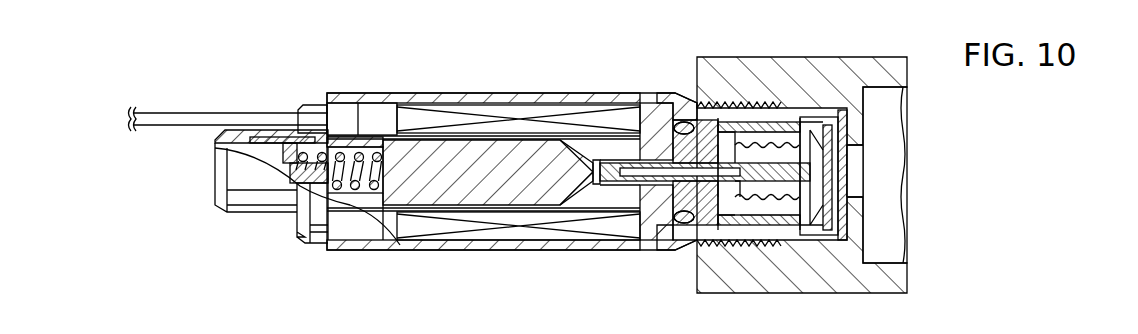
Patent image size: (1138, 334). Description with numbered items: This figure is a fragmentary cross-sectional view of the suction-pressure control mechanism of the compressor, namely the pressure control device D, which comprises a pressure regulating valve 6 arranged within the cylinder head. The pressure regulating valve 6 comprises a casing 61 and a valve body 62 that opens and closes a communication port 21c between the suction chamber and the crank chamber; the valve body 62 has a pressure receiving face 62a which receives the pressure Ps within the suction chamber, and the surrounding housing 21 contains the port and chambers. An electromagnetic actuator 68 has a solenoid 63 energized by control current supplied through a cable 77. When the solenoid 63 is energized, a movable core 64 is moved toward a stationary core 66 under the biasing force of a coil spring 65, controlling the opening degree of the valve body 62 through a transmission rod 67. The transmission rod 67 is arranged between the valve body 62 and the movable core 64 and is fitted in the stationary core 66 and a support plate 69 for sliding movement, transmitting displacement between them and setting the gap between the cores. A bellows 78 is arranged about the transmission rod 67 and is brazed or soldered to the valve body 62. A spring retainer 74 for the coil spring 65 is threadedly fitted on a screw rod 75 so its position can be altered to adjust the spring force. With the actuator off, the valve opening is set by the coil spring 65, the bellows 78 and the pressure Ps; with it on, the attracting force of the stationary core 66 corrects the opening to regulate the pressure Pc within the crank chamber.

The pressure regulating valve 6 is at (585, 253).
The valve body block 21 is at (900, 274).
The communication port 21c is at (852, 193).
The casing 61 is at (452, 251).
The valve body 62 is at (815, 233).
The pressure receiving face 62a is at (845, 214).
The solenoid 63 is at (588, 116).
The movable core 64 is at (432, 195).
The coil spring 65 is at (357, 189).
The stationary core 66 is at (642, 203).
The transmission rod 67 is at (684, 228).
The electromagnetic actuator 68 is at (427, 117).
The support plate 69 is at (708, 122).
The spring retainer 74 is at (283, 148).
The screw rod 75 is at (303, 238).
The cable 77 is at (198, 115).
The bellows 78 is at (735, 198).
The pressure control device D is at (508, 92).
The pressure within the crank chamber Pc is at (898, 114).
The pressure within the suction chamber Ps is at (810, 128).